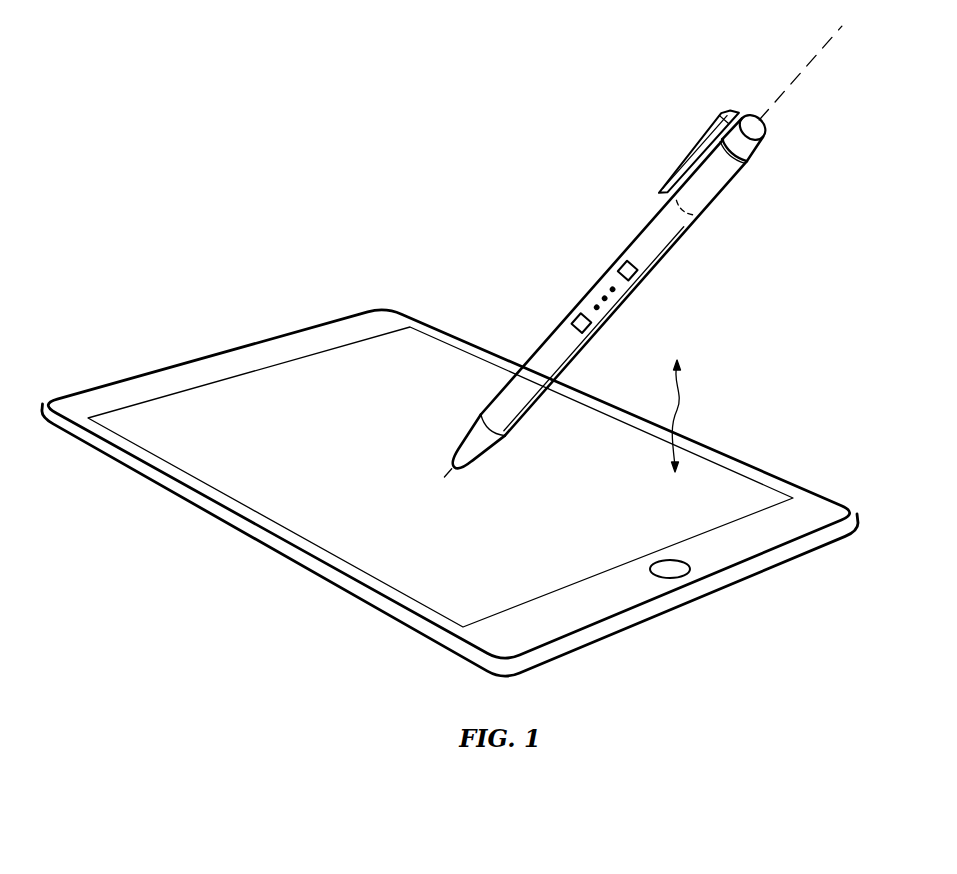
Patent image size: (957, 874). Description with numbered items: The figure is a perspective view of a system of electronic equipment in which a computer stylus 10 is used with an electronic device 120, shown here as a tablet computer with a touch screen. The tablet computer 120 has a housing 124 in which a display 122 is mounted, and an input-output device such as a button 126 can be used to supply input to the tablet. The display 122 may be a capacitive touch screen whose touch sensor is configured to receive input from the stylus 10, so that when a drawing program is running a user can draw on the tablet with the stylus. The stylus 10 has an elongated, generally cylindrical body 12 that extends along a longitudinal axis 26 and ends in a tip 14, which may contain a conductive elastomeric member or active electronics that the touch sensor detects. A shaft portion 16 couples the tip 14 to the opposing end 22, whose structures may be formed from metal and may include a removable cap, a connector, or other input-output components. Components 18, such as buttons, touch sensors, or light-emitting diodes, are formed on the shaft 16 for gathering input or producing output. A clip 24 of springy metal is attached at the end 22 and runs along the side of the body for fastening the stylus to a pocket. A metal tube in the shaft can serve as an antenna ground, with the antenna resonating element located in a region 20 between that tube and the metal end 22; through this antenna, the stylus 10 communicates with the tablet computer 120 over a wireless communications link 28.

The computer stylus 10 is at (625, 291).
The stylus body 12 is at (667, 252).
The tip 14 is at (466, 439).
The shaft portion 16 is at (561, 400).
The components 18 is at (636, 275).
The region 20 is at (716, 194).
The opposing end 22 is at (756, 150).
The clip 24 is at (685, 152).
The longitudinal axis 26 is at (800, 78).
The wireless communications link 28 is at (683, 401).
The electronic device 120 is at (450, 481).
The display 122 is at (289, 380).
The housing 124 is at (129, 471).
The button 126 is at (671, 579).